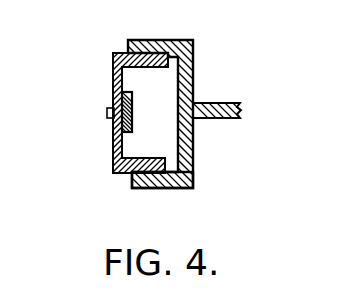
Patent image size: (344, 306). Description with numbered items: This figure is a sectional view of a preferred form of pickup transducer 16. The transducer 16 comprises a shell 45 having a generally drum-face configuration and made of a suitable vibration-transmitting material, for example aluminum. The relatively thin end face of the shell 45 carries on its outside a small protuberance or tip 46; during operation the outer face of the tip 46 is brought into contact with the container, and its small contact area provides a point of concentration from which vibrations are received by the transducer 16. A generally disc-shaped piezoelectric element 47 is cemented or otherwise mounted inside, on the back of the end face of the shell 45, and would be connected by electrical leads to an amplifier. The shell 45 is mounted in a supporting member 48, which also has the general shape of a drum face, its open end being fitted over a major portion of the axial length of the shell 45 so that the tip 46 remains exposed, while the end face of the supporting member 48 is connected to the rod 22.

The pickup transducer 16 is at (213, 62).
The rod 22 is at (214, 103).
The shell 45 is at (120, 60).
The tip 46 is at (107, 112).
The piezoelectric element 47 is at (133, 110).
The supporting member 48 is at (168, 188).